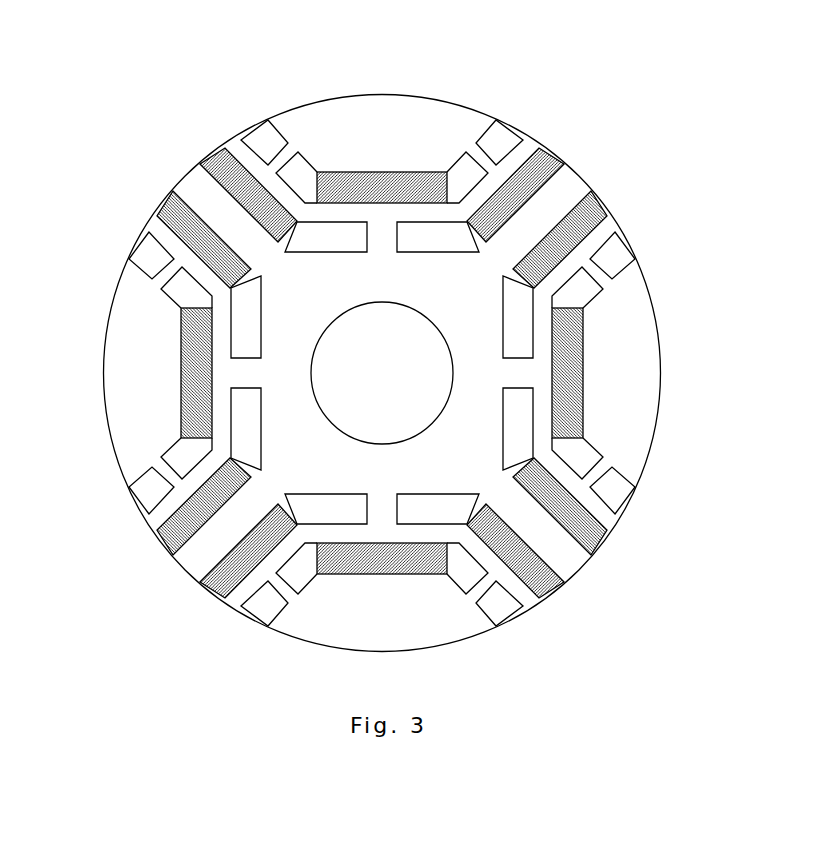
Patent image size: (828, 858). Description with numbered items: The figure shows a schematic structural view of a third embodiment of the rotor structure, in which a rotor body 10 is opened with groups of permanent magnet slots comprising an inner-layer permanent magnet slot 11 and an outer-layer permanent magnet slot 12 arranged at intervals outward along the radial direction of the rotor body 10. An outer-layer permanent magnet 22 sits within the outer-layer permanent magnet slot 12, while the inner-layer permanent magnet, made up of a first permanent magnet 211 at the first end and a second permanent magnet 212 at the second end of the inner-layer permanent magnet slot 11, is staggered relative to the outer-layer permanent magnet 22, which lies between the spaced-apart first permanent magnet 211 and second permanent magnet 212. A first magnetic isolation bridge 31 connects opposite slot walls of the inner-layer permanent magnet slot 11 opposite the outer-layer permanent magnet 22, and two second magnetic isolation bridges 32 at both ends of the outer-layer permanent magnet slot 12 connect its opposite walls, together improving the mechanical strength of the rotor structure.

The rotor body 10 is at (352, 128).
The inner-layer permanent magnet slot 11 is at (427, 238).
The outer-layer permanent magnet slot 12 is at (178, 290).
The outer-layer permanent magnet 22 is at (368, 198).
The first magnetic isolation bridge 31 is at (387, 237).
The second magnetic isolation bridge 32 is at (281, 163).
The first permanent magnet 211 is at (223, 150).
The second permanent magnet 212 is at (513, 200).